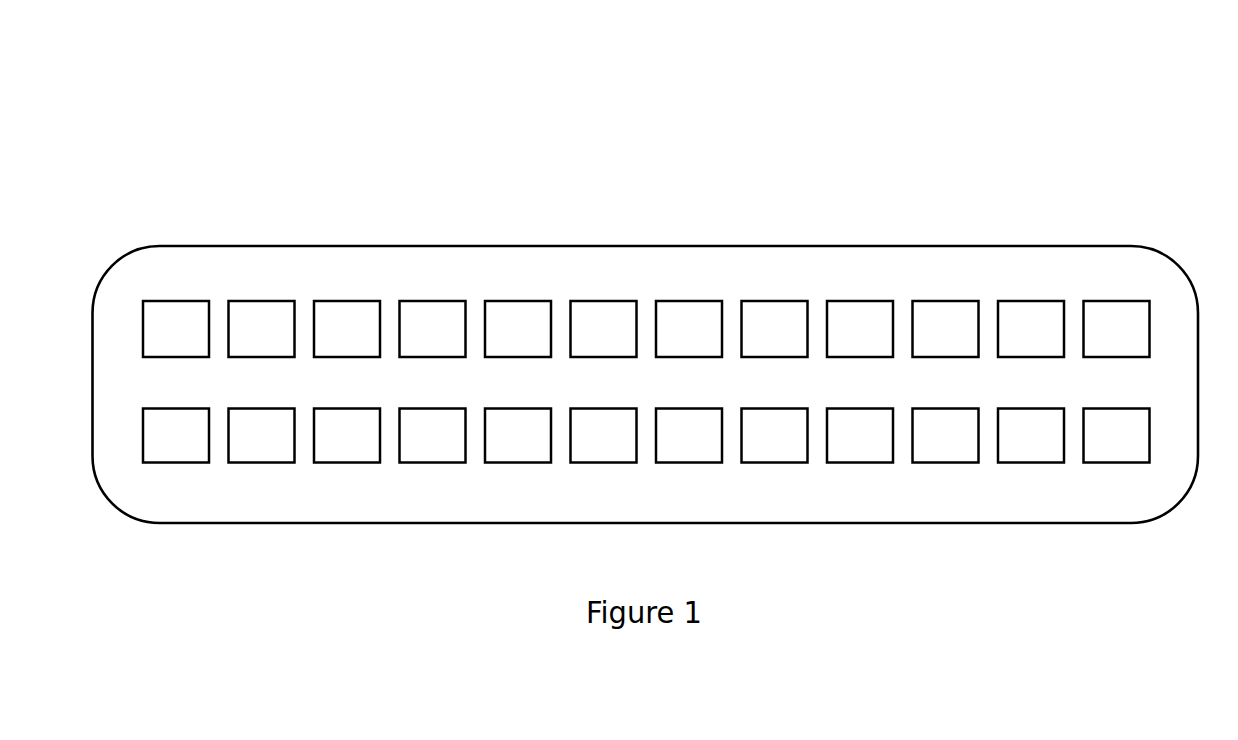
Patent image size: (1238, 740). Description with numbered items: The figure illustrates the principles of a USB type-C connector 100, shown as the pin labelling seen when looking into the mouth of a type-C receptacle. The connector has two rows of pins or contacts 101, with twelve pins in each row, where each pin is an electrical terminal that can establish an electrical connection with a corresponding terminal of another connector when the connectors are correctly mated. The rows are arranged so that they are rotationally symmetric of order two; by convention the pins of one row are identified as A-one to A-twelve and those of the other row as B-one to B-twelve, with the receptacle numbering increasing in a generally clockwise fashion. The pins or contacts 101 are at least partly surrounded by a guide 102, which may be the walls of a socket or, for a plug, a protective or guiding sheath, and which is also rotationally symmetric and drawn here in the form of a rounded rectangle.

The USB type-C connector 100 is at (1155, 141).
The pins or contacts 101 is at (507, 298).
The guide 102 is at (998, 248).